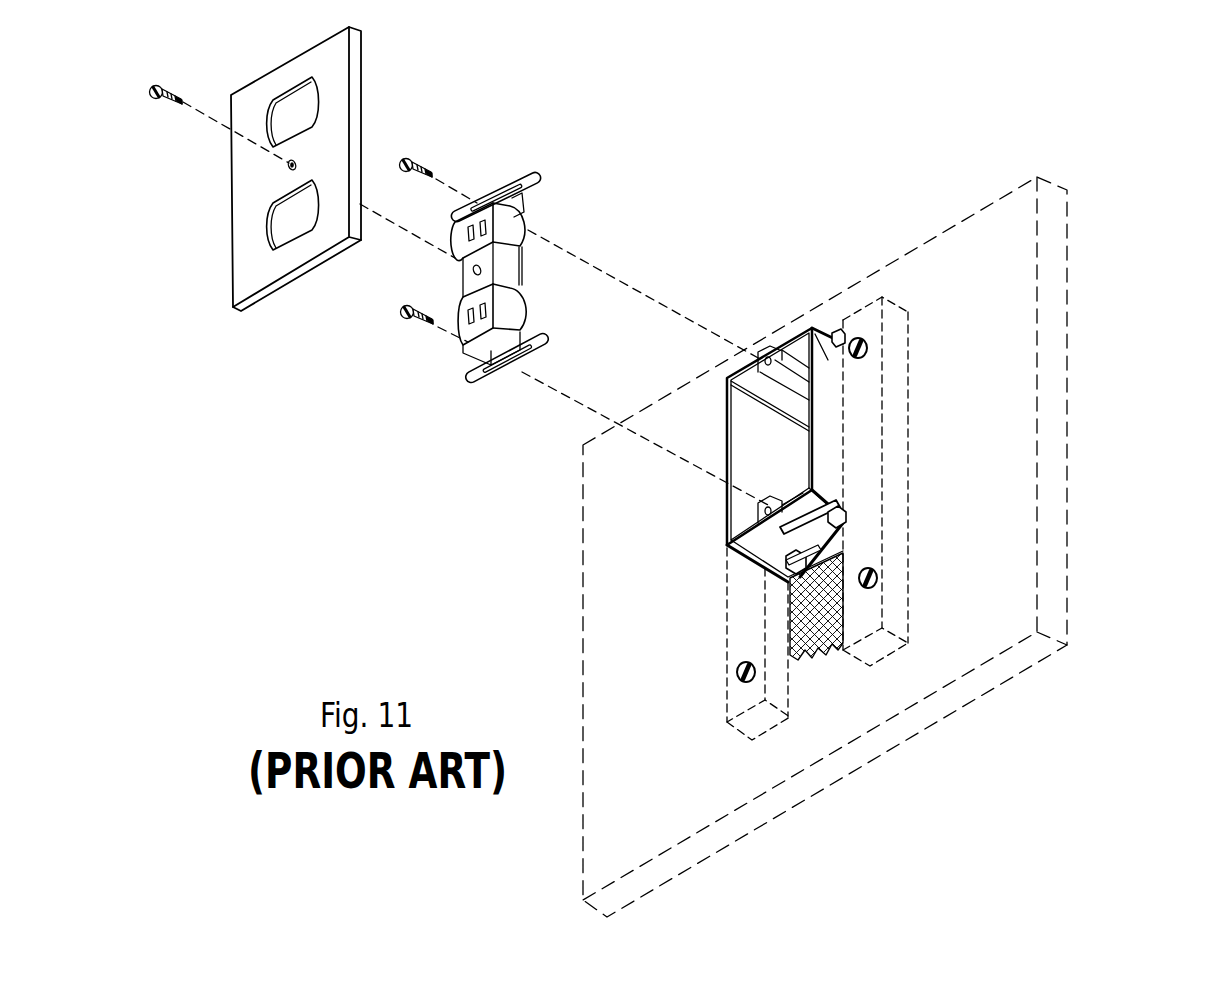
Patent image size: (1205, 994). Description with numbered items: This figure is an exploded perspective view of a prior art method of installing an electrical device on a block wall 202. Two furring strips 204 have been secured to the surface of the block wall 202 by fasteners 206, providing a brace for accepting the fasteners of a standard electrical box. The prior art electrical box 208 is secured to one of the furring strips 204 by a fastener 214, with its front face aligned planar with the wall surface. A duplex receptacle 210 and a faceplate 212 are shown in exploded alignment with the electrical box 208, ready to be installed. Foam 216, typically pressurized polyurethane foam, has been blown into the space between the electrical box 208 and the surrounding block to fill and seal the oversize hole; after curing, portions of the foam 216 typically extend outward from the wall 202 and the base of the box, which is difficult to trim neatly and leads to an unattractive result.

The block wall 202 is at (675, 784).
The furring strips 204 is at (867, 428).
The fasteners 206 is at (737, 672).
The electrical box 208 is at (808, 328).
The duplex receptacle 210 is at (490, 338).
The faceplate 212 is at (297, 255).
The fastener 214 is at (845, 557).
The foam 216 is at (832, 330).